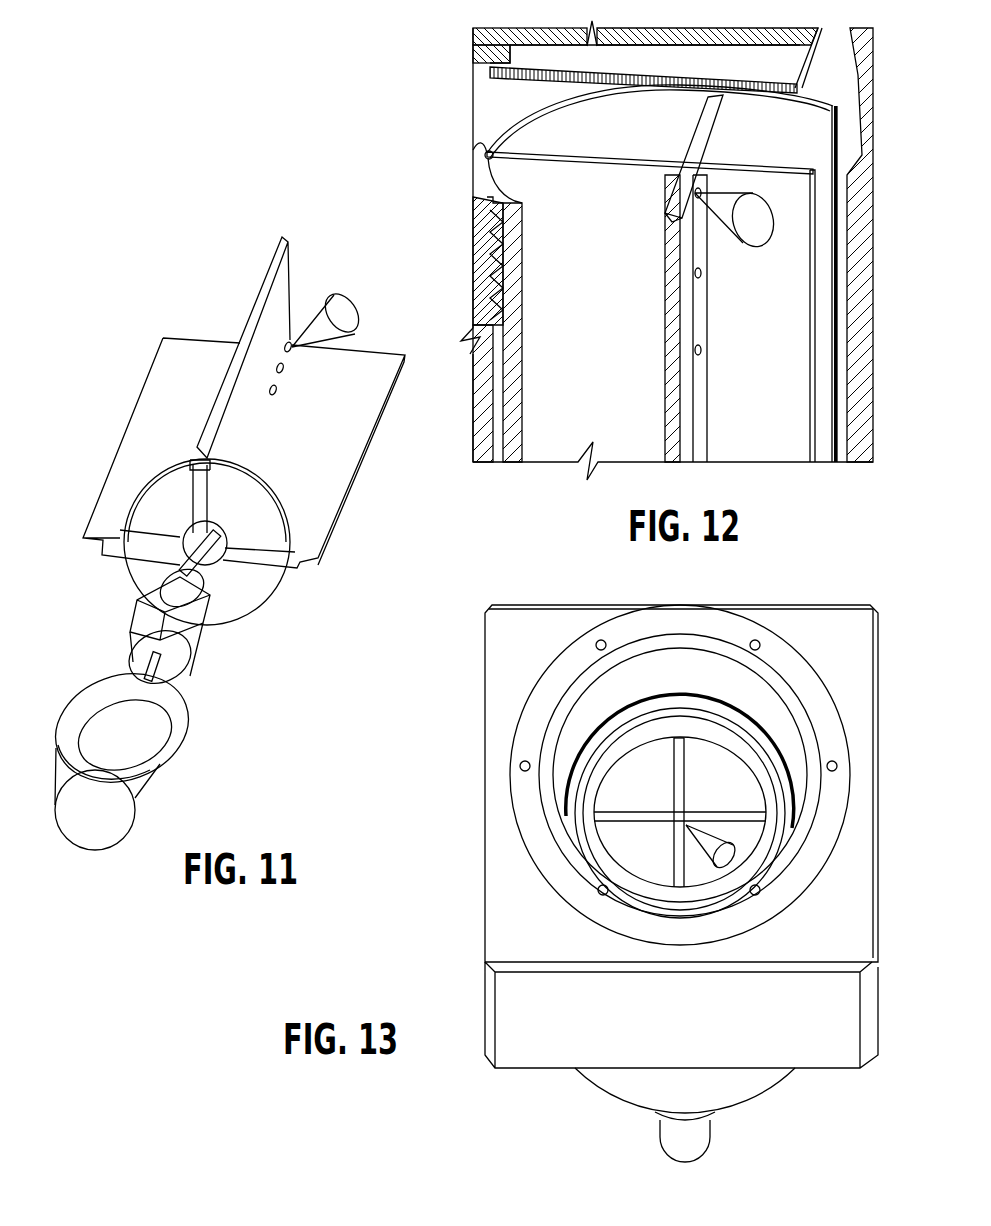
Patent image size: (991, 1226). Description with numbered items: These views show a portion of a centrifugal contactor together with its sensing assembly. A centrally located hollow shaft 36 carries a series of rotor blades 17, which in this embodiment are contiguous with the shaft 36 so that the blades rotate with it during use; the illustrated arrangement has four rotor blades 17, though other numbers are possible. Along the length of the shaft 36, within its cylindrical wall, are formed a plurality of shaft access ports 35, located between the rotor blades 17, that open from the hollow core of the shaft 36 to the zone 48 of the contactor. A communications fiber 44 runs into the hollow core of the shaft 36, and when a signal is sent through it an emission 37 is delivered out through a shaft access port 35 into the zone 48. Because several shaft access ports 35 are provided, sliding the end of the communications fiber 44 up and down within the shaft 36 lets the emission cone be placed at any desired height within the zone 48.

In FIG. 11, the rotor blades 17 is at (160, 415).
In FIG. 12, the rotor blades 17 is at (601, 263).
In FIG. 13, the rotor blades 17 is at (742, 812).
In FIG. 11, the shaft access ports 35 is at (277, 392).
In FIG. 12, the shaft access ports 35 is at (703, 348).
In FIG. 11, the shaft 36 is at (257, 423).
In FIG. 12, the shaft 36 is at (707, 425).
In FIG. 13, the shaft 36 is at (657, 806).
In FIG. 11, the emission 37 is at (347, 307).
In FIG. 12, the emission 37 is at (757, 218).
In FIG. 13, the emission 37 is at (737, 855).
In FIG. 11, the communications fiber 44 is at (158, 662).
In FIG. 13, the zone 48 is at (633, 858).